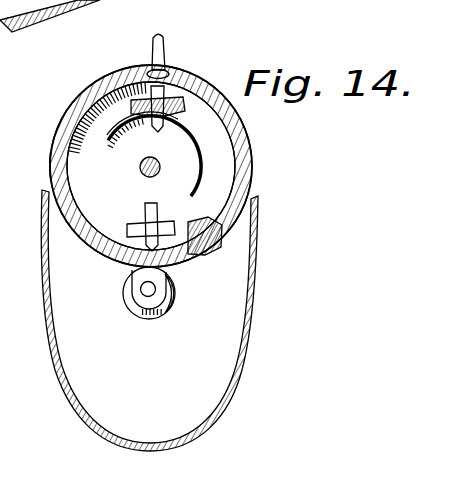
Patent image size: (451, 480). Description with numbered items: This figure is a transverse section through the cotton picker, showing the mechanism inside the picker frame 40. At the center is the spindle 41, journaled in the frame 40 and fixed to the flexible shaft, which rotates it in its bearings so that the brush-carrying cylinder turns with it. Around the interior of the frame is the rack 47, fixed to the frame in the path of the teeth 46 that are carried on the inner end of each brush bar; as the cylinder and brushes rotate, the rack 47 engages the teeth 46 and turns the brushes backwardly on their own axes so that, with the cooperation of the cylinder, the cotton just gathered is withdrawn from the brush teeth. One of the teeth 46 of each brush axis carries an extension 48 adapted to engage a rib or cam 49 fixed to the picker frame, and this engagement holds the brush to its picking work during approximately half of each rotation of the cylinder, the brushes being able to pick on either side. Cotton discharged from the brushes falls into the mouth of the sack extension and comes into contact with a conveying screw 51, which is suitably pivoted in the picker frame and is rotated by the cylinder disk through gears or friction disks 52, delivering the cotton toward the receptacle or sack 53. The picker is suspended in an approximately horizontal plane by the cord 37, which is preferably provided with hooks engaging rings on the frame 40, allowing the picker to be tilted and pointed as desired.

The cord 37 is at (167, 50).
The picker frame 40 is at (50, 168).
The spindle 41 is at (140, 169).
The teeth 46 is at (163, 98).
The rack 47 is at (104, 257).
The extension 48 is at (164, 116).
The rib or cam 49 is at (205, 161).
The conveying screw 51 is at (150, 318).
The gears or friction disks 52 is at (180, 301).
The receptacle or sack 53 is at (244, 359).